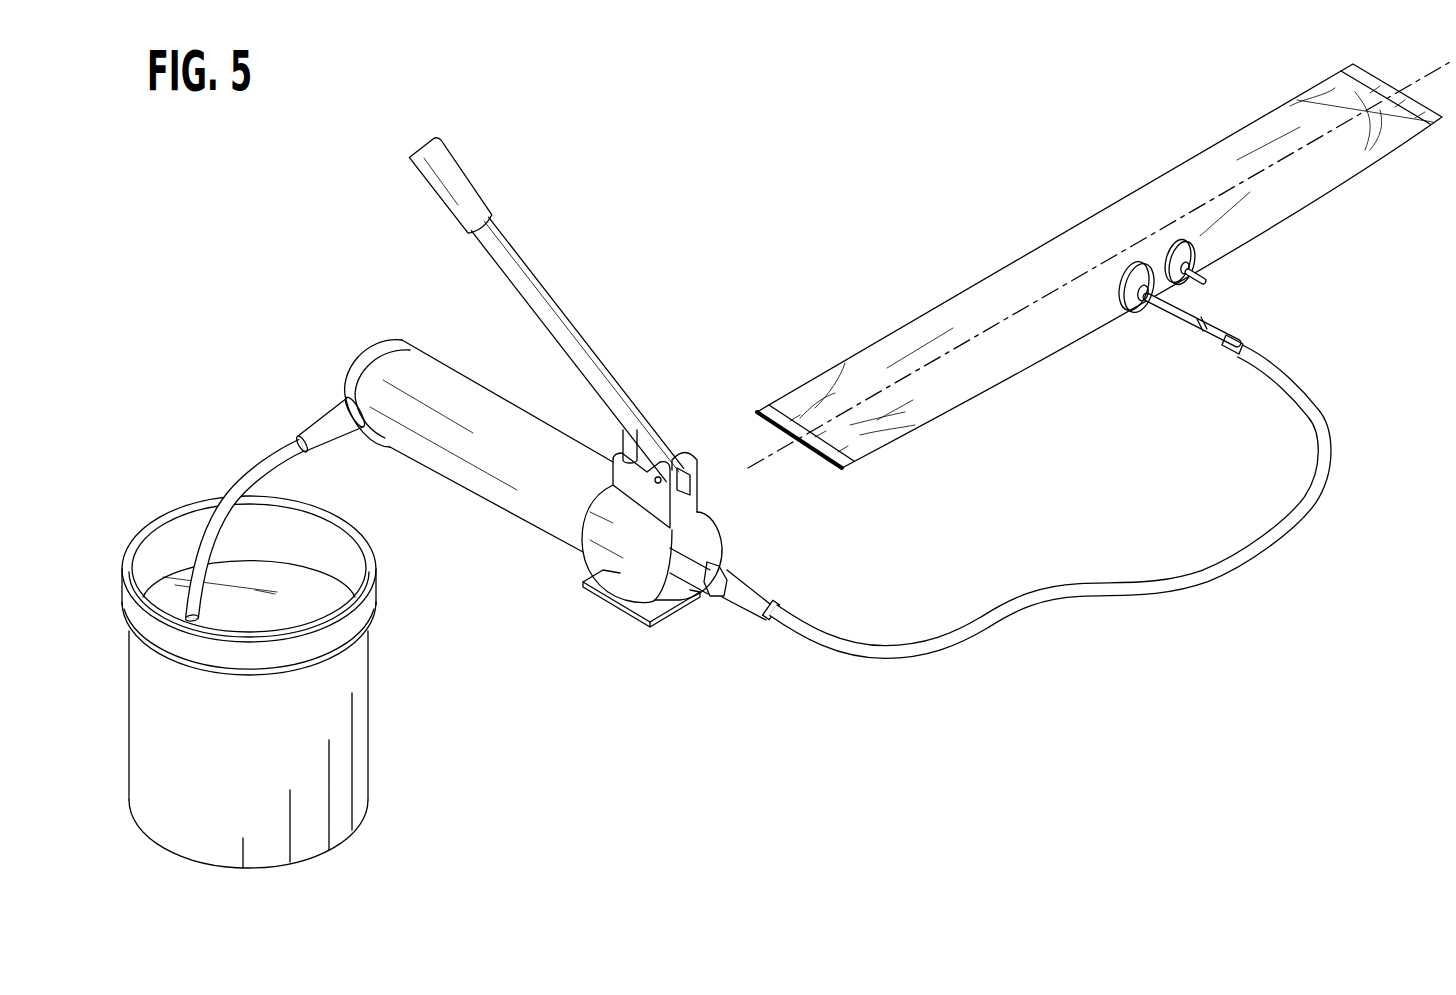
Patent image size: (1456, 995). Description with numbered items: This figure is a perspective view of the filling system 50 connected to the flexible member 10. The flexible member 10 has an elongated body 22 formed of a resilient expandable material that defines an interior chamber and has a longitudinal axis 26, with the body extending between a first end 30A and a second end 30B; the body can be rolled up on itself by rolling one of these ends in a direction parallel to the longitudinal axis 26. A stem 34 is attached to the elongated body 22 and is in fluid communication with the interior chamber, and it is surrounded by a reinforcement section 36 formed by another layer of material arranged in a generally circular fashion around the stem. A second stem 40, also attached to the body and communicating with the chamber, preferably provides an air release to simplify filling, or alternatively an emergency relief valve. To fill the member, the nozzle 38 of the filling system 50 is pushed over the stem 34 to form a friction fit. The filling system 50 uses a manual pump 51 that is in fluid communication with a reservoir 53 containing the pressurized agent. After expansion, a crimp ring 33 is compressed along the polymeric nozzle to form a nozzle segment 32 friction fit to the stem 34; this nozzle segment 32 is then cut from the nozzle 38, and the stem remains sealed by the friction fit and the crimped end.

The flexible member 10 is at (956, 215).
The elongated body 22 is at (1346, 156).
The longitudinal axis 26 is at (1431, 72).
The first end 30A is at (830, 472).
The second end 30B is at (1358, 64).
The nozzle segment 32 is at (1178, 320).
The crimp ring 33 is at (1204, 319).
The stem 34 is at (1150, 300).
The reinforcement section 36 is at (1200, 257).
The nozzle 38 is at (1242, 334).
The second stem 40 is at (1208, 282).
The filling system 50 is at (266, 330).
The manual pump 51 is at (572, 522).
The reservoir 53 is at (357, 742).